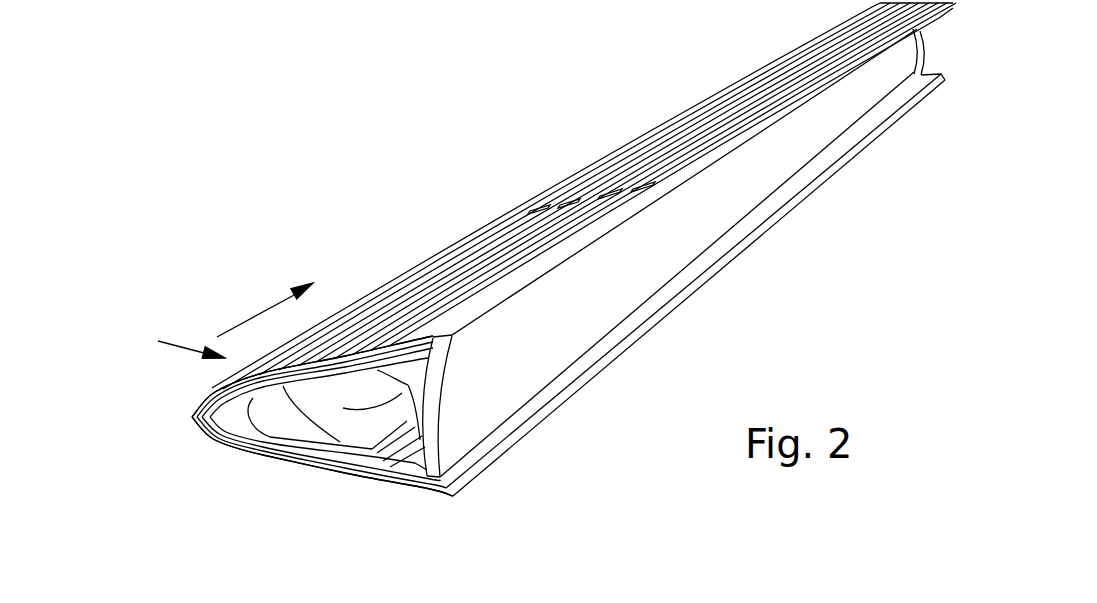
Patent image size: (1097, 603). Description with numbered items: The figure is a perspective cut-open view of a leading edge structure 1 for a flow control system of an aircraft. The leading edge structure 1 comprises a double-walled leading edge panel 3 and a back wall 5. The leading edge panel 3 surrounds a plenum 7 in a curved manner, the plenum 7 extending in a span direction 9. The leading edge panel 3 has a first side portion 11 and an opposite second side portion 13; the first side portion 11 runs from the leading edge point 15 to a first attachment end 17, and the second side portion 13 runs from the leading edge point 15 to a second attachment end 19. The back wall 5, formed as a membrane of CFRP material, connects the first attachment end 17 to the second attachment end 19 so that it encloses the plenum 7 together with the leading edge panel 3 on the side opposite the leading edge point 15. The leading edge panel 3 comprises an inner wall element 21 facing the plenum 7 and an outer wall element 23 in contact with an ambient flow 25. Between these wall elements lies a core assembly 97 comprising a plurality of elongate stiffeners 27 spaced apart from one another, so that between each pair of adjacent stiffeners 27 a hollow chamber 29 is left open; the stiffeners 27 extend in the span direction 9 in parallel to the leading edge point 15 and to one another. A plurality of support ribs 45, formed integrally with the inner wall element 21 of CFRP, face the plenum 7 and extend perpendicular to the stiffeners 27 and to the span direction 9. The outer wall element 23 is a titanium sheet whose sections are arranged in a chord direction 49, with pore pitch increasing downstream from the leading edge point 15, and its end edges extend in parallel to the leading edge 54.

The leading edge structure 1 is at (388, 165).
The leading edge panel 3 is at (462, 258).
The back wall 5 is at (745, 193).
The plenum 7 is at (385, 418).
The span direction 9 is at (255, 312).
The first side portion 11 is at (513, 257).
The second side portion 13 is at (284, 475).
The leading edge point 15 is at (187, 417).
The first attachment end 17 is at (453, 338).
The second attachment end 19 is at (440, 476).
The inner wall element 21 is at (247, 418).
The outer wall element 23 is at (450, 323).
The ambient flow 25 is at (368, 289).
The stiffeners 27 is at (548, 205).
The hollow chamber 29 is at (692, 157).
The support ribs 45 is at (310, 437).
The chord direction 49 is at (176, 342).
The leading edge 54 is at (187, 417).
The core assembly 97 is at (588, 213).